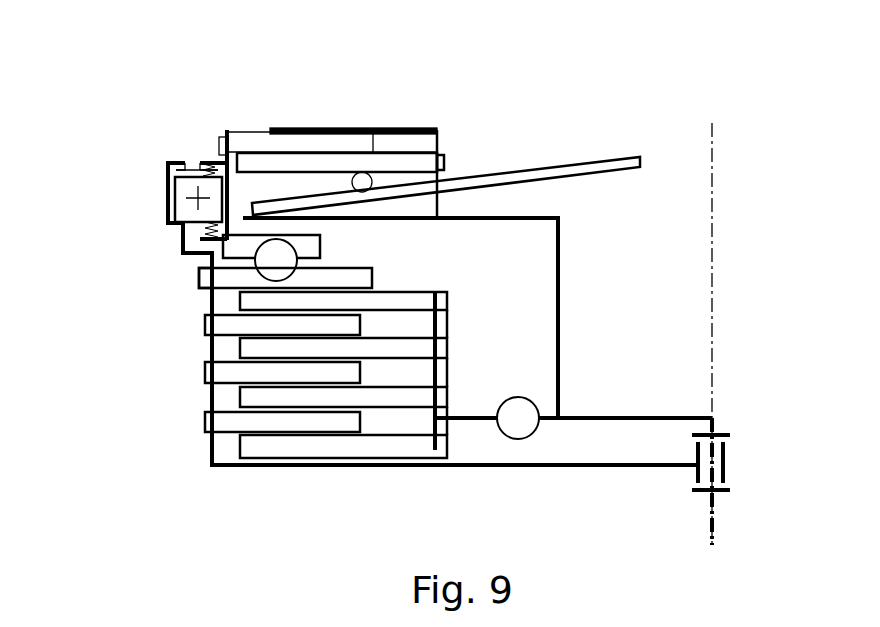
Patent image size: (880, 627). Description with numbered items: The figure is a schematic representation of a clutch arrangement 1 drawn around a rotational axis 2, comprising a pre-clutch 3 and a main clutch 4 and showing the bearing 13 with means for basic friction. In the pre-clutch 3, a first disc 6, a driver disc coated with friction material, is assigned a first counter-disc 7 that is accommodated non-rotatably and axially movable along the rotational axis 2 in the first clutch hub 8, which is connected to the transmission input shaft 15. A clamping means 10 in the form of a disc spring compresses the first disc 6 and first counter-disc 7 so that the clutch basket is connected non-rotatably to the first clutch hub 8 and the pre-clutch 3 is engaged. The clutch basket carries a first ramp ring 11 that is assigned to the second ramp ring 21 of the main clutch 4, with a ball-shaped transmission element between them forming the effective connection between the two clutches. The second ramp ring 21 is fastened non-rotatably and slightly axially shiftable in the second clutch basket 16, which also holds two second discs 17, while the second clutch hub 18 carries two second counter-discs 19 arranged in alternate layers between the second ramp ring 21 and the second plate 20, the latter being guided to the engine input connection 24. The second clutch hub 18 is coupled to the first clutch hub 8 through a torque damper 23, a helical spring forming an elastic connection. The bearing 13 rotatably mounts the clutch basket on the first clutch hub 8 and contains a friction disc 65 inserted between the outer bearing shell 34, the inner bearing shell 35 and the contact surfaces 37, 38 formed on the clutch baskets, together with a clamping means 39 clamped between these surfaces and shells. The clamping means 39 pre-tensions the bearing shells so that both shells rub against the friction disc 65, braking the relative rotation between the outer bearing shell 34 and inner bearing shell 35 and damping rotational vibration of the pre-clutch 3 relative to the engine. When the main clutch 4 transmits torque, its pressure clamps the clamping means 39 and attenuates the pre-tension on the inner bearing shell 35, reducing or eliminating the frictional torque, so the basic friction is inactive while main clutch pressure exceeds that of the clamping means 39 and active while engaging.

The pressure regulating system 1 is at (408, 301).
The rotational axis 2 is at (715, 312).
The pre-clutch 3 is at (433, 125).
The main clutch 4 is at (388, 404).
The first disc 6 is at (262, 143).
The first counter-disc 7 is at (446, 162).
The first clutch hub 8 is at (440, 136).
The clamping means 10 is at (555, 172).
The first ramp ring 11 is at (320, 247).
The bearing 13 is at (141, 195).
The transmission input shaft 15 is at (722, 494).
The second clutch basket 16 is at (210, 450).
The second disc 17 is at (205, 418).
The second clutch hub 18 is at (438, 326).
The second counter-disc 19 is at (449, 298).
The second plate 20 is at (375, 467).
The second ramp ring 21 is at (373, 276).
The torque damper 23 is at (518, 432).
The engine input connection 24 is at (692, 482).
The outer bearing shell 34 is at (167, 180).
The inner bearing shell 35 is at (210, 160).
The contact surface 37 is at (177, 160).
The contact surface 38 is at (218, 152).
The clamping means 39 is at (203, 250).
The friction disc 65 is at (185, 162).